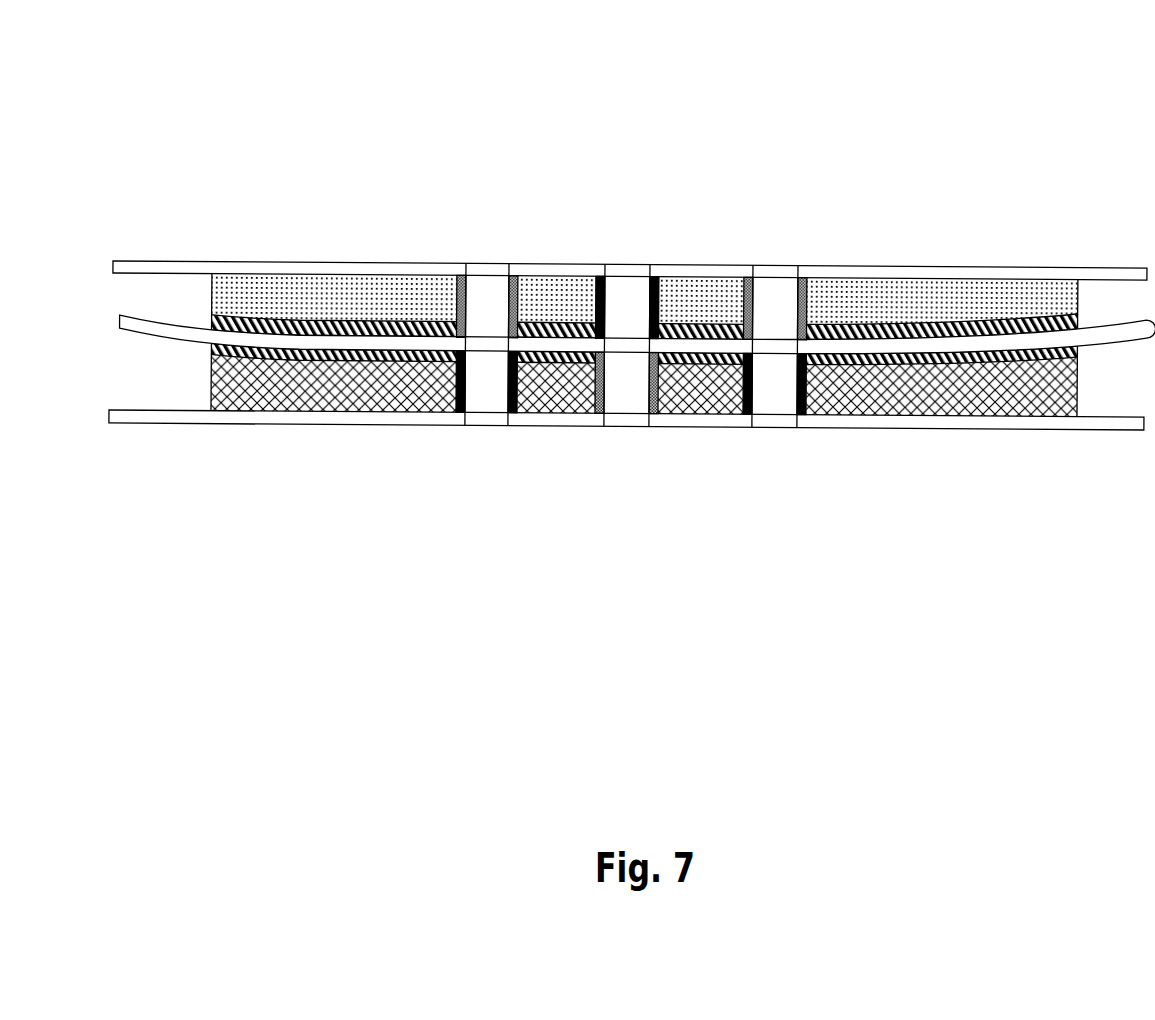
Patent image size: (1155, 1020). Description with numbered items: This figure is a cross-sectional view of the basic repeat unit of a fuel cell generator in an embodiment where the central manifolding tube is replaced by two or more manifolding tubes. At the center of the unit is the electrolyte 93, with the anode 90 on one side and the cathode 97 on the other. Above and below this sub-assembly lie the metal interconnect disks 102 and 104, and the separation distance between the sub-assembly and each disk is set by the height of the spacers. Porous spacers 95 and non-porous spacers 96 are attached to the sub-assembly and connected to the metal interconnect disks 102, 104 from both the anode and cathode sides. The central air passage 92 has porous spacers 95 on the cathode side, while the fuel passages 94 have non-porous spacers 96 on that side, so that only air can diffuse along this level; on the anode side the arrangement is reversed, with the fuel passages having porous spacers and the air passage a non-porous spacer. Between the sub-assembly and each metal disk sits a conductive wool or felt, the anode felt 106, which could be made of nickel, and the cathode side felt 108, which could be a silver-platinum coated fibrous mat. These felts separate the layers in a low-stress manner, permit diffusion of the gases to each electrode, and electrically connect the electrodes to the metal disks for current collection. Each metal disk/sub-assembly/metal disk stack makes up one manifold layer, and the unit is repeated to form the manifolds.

The anode 90 is at (218, 293).
The central air passage 92 is at (626, 248).
The electrolyte 93 is at (1095, 351).
The fuel passages 94 is at (481, 246).
The porous spacers 95 is at (488, 290).
The non-porous spacers 96 is at (496, 426).
The cathode 97 is at (247, 375).
The metal interconnect disk 102 is at (950, 250).
The metal interconnect disk 104 is at (838, 440).
The anode felt 106 is at (1046, 274).
The cathode side felt 108 is at (946, 416).